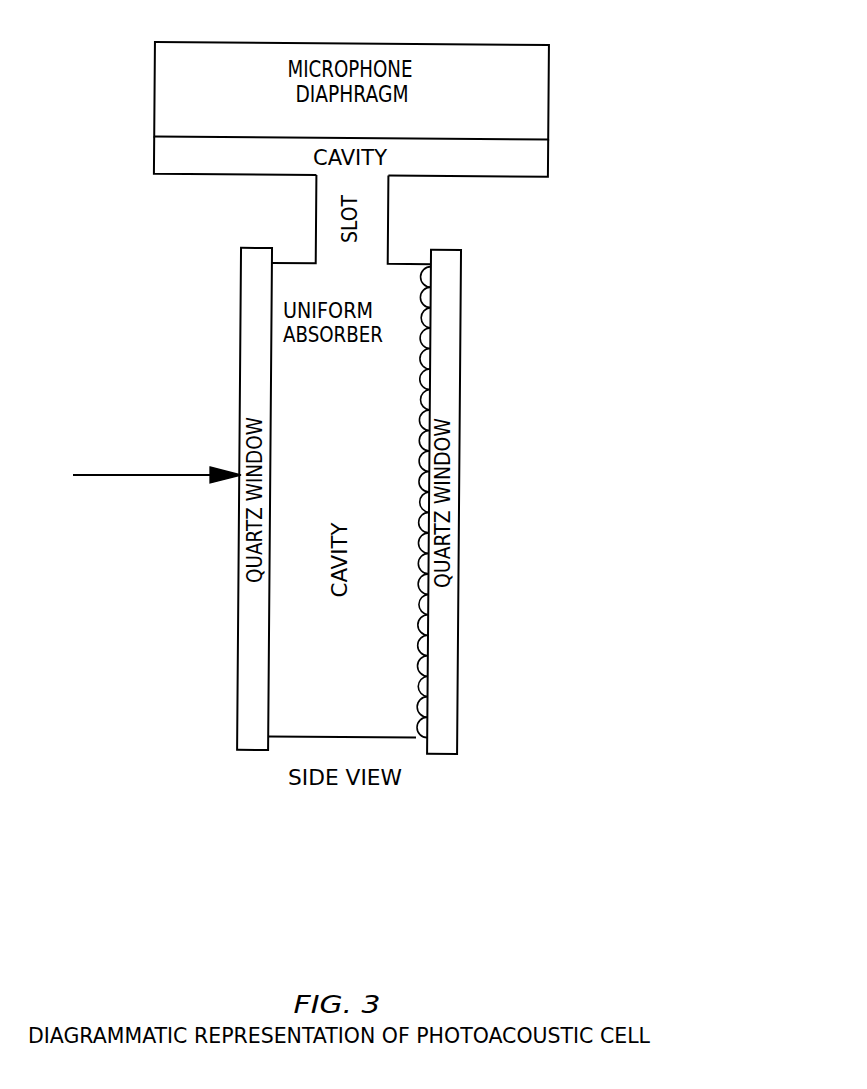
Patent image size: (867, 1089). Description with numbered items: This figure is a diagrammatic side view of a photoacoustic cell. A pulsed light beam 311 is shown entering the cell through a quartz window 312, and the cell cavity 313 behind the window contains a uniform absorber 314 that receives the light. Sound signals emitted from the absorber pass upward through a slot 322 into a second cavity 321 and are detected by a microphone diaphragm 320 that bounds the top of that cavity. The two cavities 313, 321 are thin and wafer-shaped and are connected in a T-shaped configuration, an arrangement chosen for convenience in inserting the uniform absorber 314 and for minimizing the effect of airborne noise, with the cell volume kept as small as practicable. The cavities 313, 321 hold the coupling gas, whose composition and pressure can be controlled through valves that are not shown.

The pulsed light beam 311 is at (128, 476).
The quartz window 312 is at (248, 350).
The cavity 313 is at (355, 556).
The uniform absorber 314 is at (418, 354).
The microphone diaphragm 320 is at (503, 137).
The cavity 321 is at (541, 163).
The slot 322 is at (388, 223).